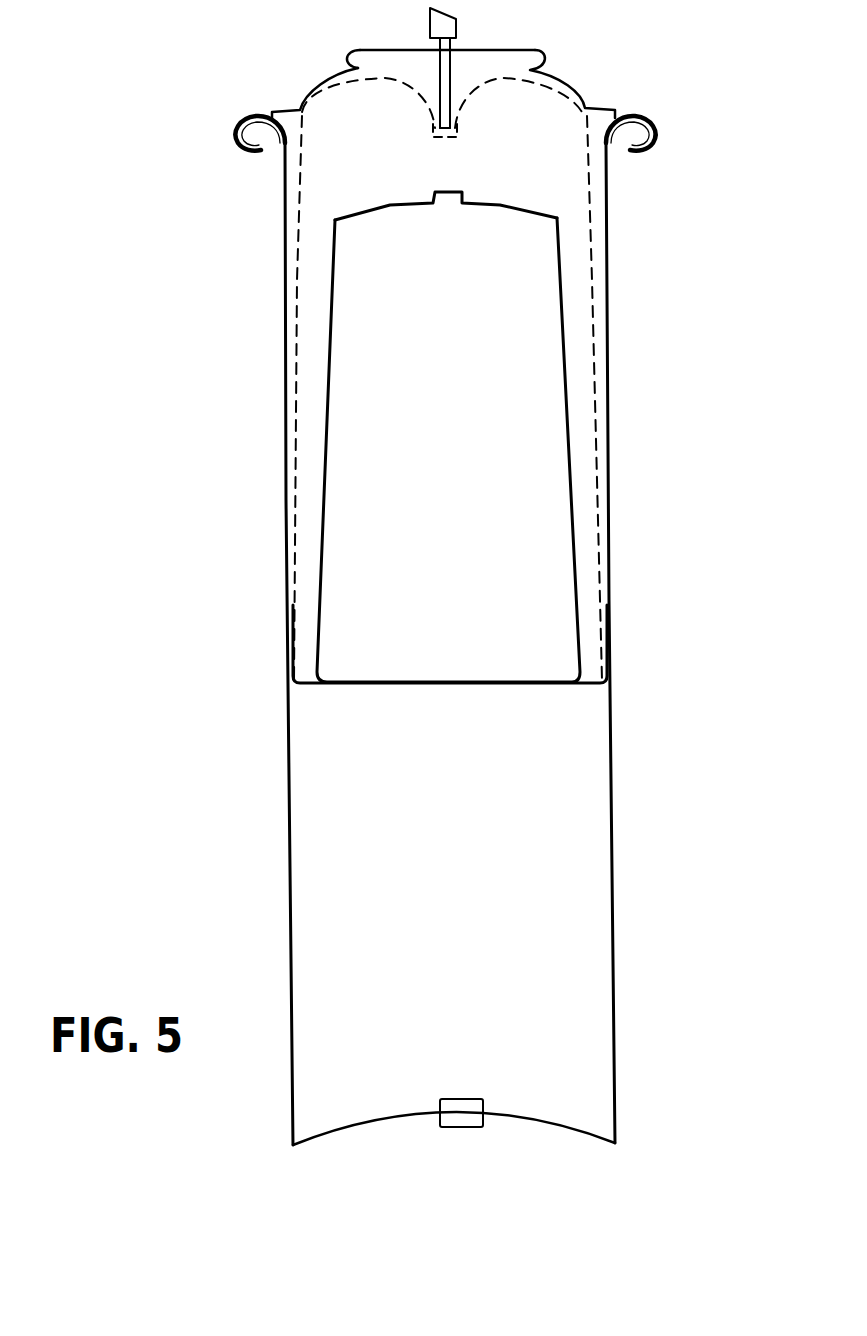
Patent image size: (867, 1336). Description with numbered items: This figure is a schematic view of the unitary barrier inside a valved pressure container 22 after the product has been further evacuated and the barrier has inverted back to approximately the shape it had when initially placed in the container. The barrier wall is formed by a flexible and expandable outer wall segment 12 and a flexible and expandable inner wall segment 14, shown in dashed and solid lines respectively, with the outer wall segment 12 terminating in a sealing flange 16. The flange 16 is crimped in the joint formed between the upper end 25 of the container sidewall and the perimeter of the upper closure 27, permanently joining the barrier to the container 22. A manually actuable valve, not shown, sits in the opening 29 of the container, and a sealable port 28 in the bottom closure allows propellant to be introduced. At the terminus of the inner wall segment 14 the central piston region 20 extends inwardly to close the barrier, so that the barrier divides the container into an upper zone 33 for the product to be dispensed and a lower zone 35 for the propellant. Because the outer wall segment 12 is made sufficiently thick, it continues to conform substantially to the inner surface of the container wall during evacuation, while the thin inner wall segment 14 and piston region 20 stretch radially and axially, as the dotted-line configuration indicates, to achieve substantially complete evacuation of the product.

The outer wall segment 12 is at (287, 229).
The inner wall segment 14 is at (305, 152).
The sealing flange 16 is at (658, 137).
The central piston region 20 is at (481, 206).
The valved pressure container 22 is at (612, 530).
The upper end of the sidewall 25 is at (308, 131).
The upper closure 27 is at (631, 151).
The sealable port 28 is at (460, 1106).
The opening 29 is at (358, 50).
The upper zone 33 is at (522, 163).
The lower zone 35 is at (473, 868).